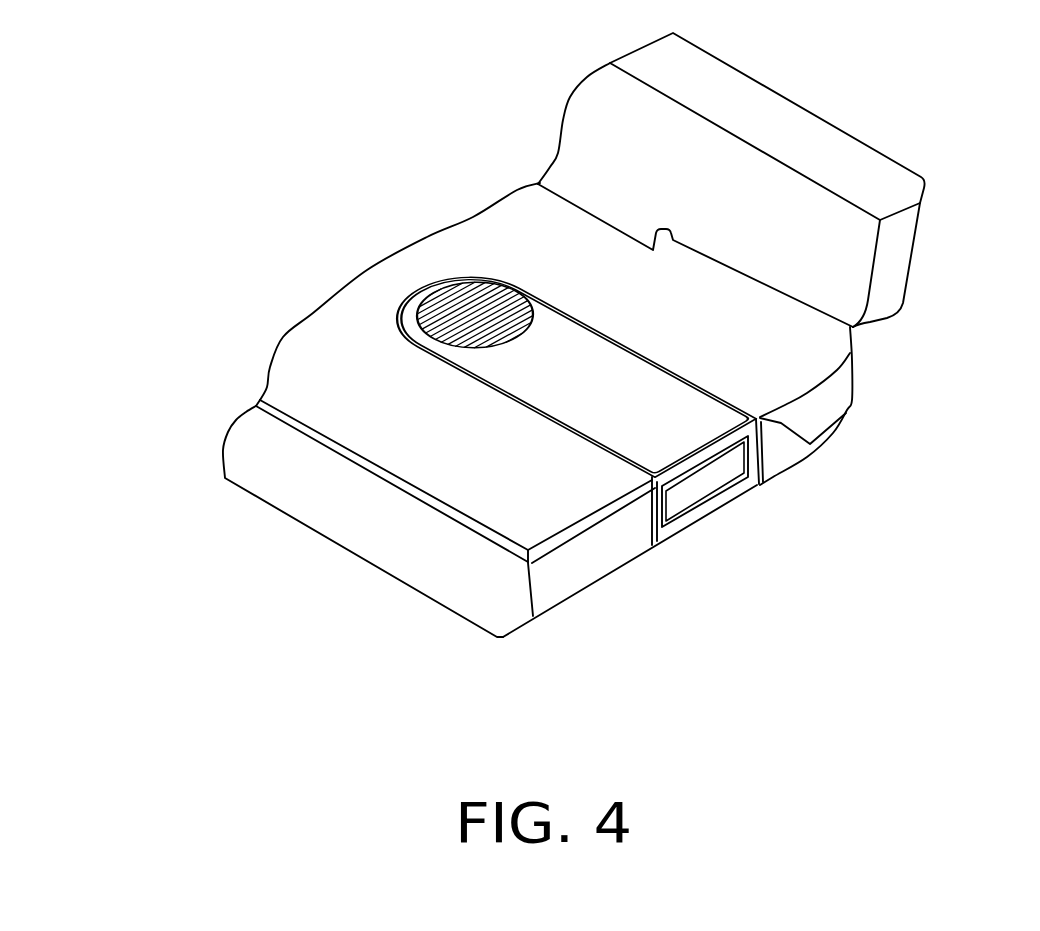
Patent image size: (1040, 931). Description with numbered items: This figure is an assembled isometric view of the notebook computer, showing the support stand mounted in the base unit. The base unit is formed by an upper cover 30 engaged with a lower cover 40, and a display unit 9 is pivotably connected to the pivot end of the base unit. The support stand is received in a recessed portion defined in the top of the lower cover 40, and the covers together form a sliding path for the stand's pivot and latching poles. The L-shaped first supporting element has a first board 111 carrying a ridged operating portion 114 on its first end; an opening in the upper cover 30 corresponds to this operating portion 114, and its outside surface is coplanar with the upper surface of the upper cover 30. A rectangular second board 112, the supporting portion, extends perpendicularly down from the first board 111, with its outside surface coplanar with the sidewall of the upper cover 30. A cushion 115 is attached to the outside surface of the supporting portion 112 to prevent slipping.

The display unit 9 is at (797, 203).
The upper cover 30 is at (370, 410).
The lower cover 40 is at (587, 553).
The first board 111 is at (623, 410).
The second board 112 is at (723, 438).
The ridged operating portion 114 is at (453, 307).
The cushion 115 is at (707, 488).